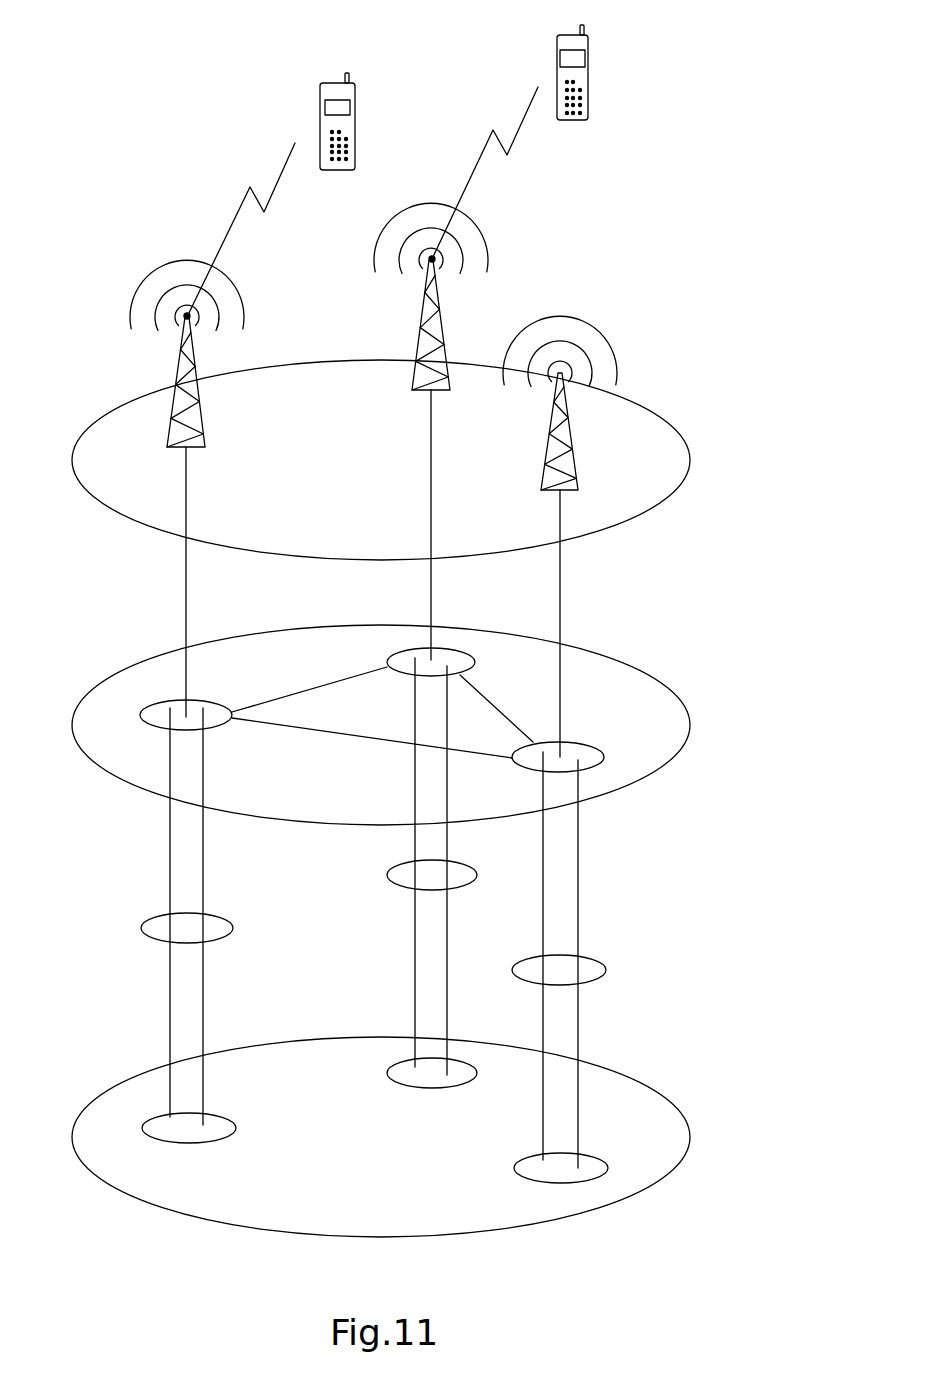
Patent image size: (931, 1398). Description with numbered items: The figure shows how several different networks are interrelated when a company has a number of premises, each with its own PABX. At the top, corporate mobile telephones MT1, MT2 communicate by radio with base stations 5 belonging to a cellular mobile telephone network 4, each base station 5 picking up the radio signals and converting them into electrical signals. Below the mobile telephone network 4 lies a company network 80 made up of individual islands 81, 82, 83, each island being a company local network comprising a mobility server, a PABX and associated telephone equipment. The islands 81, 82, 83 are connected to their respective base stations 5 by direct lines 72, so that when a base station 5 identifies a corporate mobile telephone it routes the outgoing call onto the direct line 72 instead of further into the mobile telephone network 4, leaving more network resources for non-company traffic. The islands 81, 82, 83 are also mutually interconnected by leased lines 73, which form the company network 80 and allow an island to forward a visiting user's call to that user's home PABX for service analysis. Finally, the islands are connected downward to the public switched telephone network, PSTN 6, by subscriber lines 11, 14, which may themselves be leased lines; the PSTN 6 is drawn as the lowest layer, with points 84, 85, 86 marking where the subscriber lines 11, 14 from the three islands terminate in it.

The cellular mobile telephone network 4 is at (665, 418).
The base station 5 is at (202, 418).
The public switched telephone network (PSTN) 6 is at (672, 1098).
The subscriber line 11 is at (371, 913).
The subscriber line 14 is at (148, 920).
The direct line 72 is at (185, 590).
The leased line 73 is at (317, 682).
The company network 80 is at (667, 683).
The island 81 is at (142, 708).
The island 82 is at (600, 765).
The island 83 is at (465, 650).
The core network node 84 is at (143, 1127).
The core network node 85 is at (395, 1083).
The core network node 86 is at (602, 1175).
The corporate mobile telephone MT1 is at (543, 130).
The corporate mobile telephone MT2 is at (303, 184).